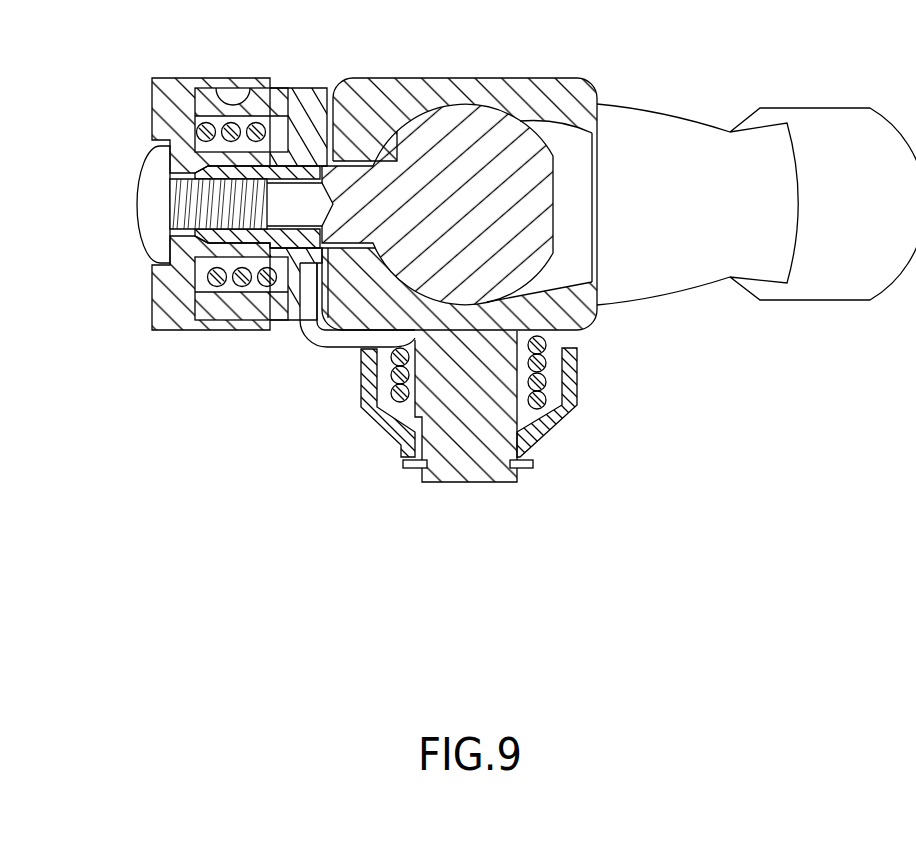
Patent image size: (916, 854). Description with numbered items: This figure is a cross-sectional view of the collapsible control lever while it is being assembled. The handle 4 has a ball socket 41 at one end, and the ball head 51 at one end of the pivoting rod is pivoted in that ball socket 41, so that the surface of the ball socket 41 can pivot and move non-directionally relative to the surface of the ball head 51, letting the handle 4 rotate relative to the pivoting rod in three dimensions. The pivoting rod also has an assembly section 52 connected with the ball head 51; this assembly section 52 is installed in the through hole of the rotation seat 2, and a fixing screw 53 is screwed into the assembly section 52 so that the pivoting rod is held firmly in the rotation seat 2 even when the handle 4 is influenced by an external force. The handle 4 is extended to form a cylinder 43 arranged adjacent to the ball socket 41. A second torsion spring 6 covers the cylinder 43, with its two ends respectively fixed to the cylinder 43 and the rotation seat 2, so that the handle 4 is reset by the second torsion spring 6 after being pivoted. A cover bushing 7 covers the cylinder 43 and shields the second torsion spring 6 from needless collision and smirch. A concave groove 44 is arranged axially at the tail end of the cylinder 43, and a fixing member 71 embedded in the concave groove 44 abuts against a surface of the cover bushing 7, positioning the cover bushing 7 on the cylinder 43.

The rotation seat 2 is at (327, 78).
The handle 4 is at (694, 98).
The ball socket 41 is at (540, 120).
The cylinder 43 is at (513, 410).
The concave groove 44 is at (417, 470).
The ball head 51 is at (483, 113).
The assembly section 52 is at (277, 175).
The fixing screw 53 is at (150, 182).
The second torsion spring 6 is at (387, 344).
The cover bushing 7 is at (580, 371).
The fixing member 71 is at (533, 465).